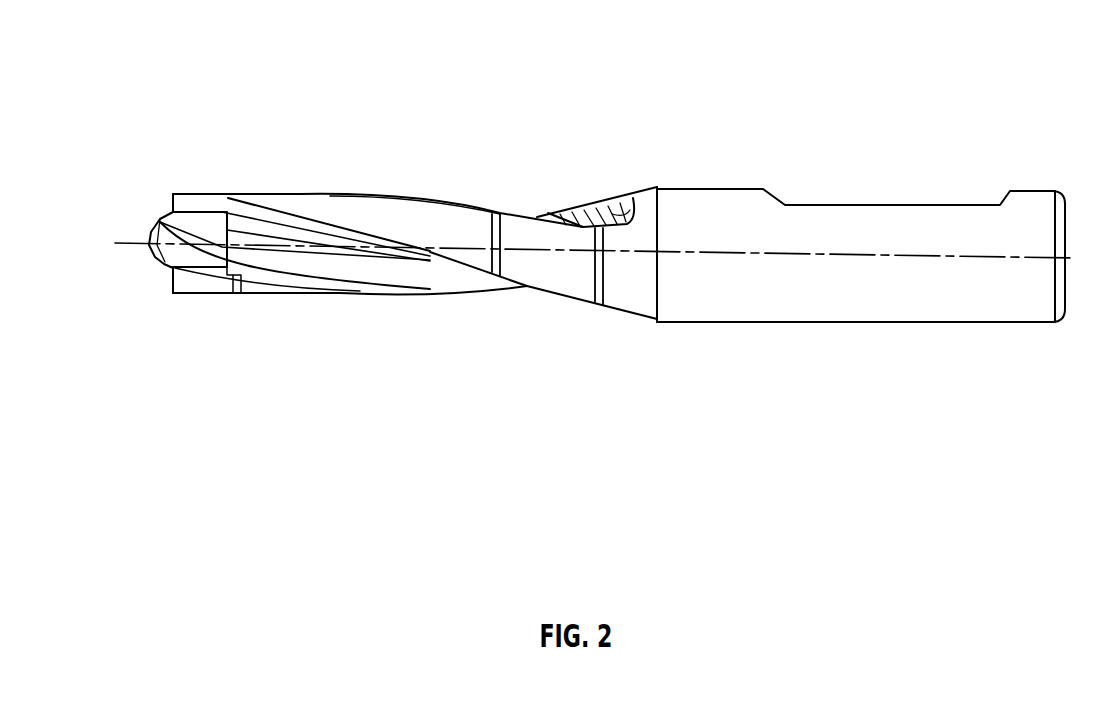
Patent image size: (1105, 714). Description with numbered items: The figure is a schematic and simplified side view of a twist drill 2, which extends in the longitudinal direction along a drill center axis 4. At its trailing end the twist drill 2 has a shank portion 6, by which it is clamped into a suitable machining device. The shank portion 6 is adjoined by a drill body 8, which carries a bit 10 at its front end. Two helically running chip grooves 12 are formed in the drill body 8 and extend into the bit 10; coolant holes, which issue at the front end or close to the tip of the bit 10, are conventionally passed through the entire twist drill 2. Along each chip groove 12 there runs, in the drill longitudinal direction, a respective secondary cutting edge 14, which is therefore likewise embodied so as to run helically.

The twist drill 2 is at (722, 84).
The drill center axis 4 is at (138, 245).
The shank portion 6 is at (877, 305).
The drill body 8 is at (458, 194).
The bit 10 is at (200, 226).
The chip groove 12 is at (573, 207).
The secondary cutting edge 14 is at (230, 198).